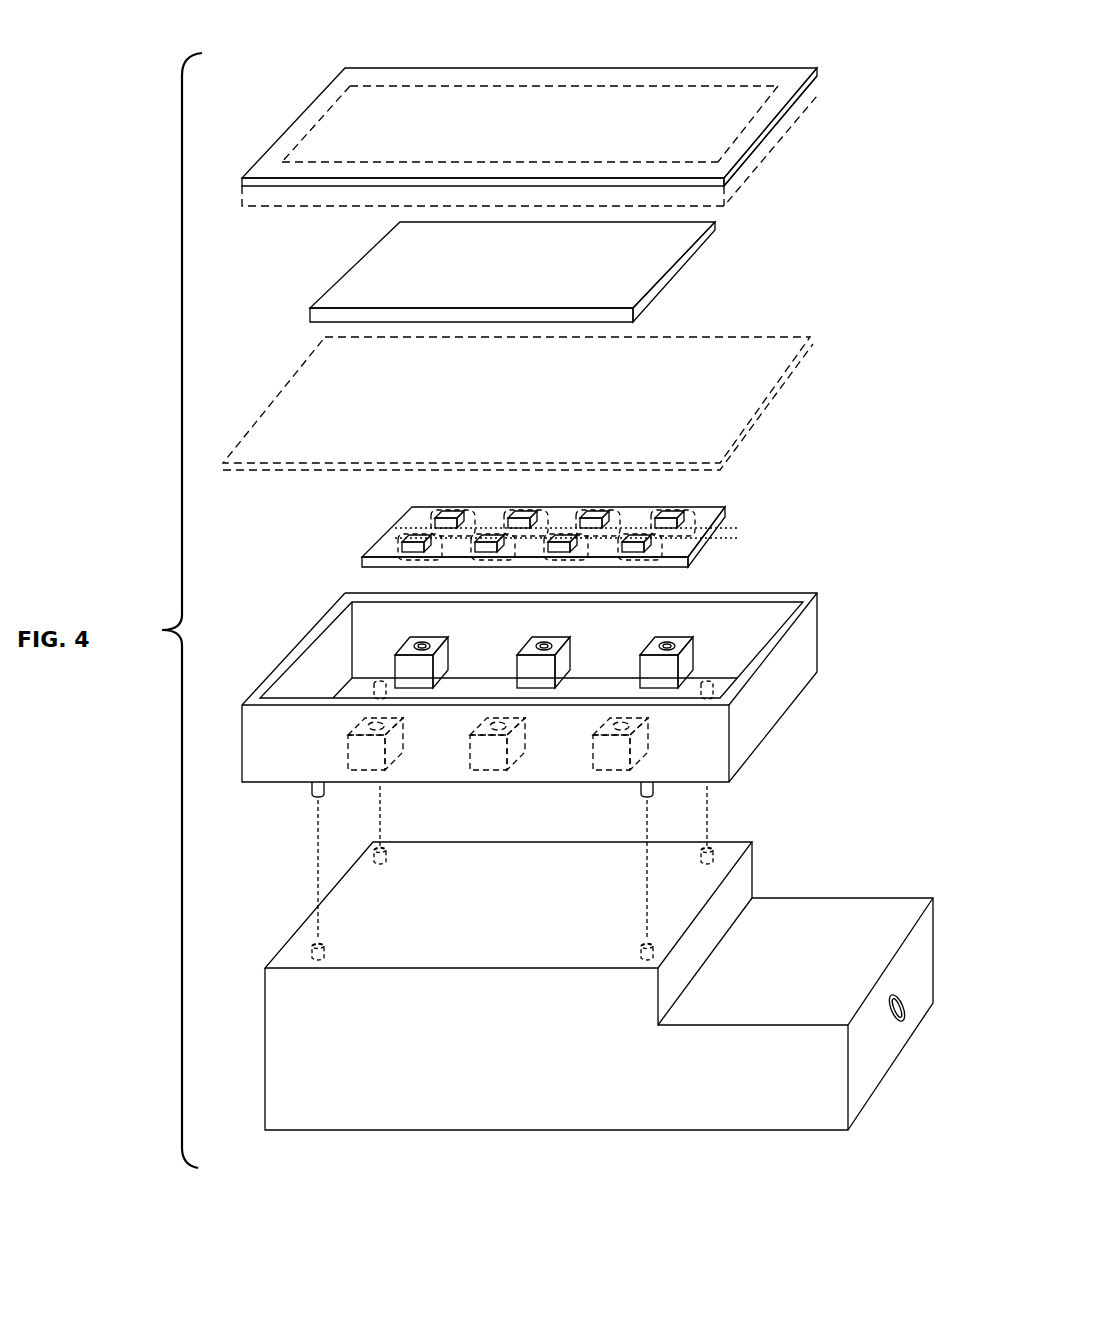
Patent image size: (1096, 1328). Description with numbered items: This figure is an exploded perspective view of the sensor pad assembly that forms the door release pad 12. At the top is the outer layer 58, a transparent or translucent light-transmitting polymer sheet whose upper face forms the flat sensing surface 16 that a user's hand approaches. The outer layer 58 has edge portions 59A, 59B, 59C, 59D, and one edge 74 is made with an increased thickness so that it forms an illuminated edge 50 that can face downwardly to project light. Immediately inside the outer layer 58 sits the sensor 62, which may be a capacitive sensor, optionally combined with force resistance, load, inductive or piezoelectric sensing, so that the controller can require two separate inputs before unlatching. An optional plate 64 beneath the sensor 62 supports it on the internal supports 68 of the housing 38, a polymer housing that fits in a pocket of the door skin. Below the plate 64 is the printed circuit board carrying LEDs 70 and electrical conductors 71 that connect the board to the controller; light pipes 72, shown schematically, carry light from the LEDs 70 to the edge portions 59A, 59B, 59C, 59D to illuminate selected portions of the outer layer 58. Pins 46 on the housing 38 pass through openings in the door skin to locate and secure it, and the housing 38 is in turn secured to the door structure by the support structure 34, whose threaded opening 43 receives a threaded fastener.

The door release pad 12 is at (850, 375).
The flat sensing surface 16 is at (487, 100).
The support structure 34 is at (476, 1132).
The housing 38 is at (826, 635).
The threaded opening 43 is at (900, 1014).
The pins 46 is at (375, 690).
The illuminated edge 50 is at (748, 164).
The outer layer 58 is at (757, 62).
The edge portion 59A is at (316, 126).
The edge portion 59B is at (614, 85).
The edge portion 59C is at (750, 126).
The edge portion 59D is at (384, 160).
The sensor 62 is at (676, 276).
The plate 64 is at (753, 337).
The internal supports 68 is at (552, 660).
The LEDs 70 is at (495, 552).
The electrical conductors 71 is at (740, 522).
The light pipes 72 is at (520, 508).
The edge 74 is at (242, 190).